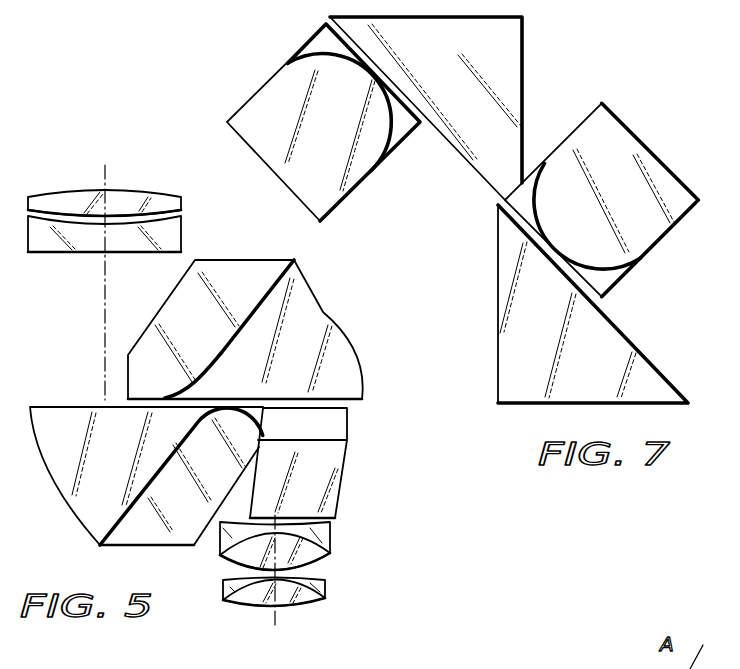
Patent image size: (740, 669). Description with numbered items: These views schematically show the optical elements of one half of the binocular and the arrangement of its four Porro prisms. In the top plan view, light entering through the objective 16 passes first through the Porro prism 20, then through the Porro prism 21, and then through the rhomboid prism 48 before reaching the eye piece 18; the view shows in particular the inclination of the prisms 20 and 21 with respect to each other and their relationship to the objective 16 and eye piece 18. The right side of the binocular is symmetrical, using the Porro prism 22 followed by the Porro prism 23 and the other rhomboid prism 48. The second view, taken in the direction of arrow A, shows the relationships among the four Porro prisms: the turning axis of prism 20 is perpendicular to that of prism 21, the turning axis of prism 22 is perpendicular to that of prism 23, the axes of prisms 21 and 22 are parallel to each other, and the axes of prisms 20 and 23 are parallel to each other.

In FIG. 5, the objective 16 is at (44, 250).
In FIG. 5, the eye piece 18 is at (298, 604).
In FIG. 5, the Porro prism 20 is at (110, 488).
In FIG. 7, the Porro prism 20 is at (321, 188).
In FIG. 5, the Porro prism 21 is at (199, 338).
In FIG. 7, the Porro prism 21 is at (486, 50).
In FIG. 7, the Porro prism 22 is at (591, 376).
In FIG. 7, the Porro prism 23 is at (576, 228).
In FIG. 5, the rhomboid prism 48 is at (320, 488).